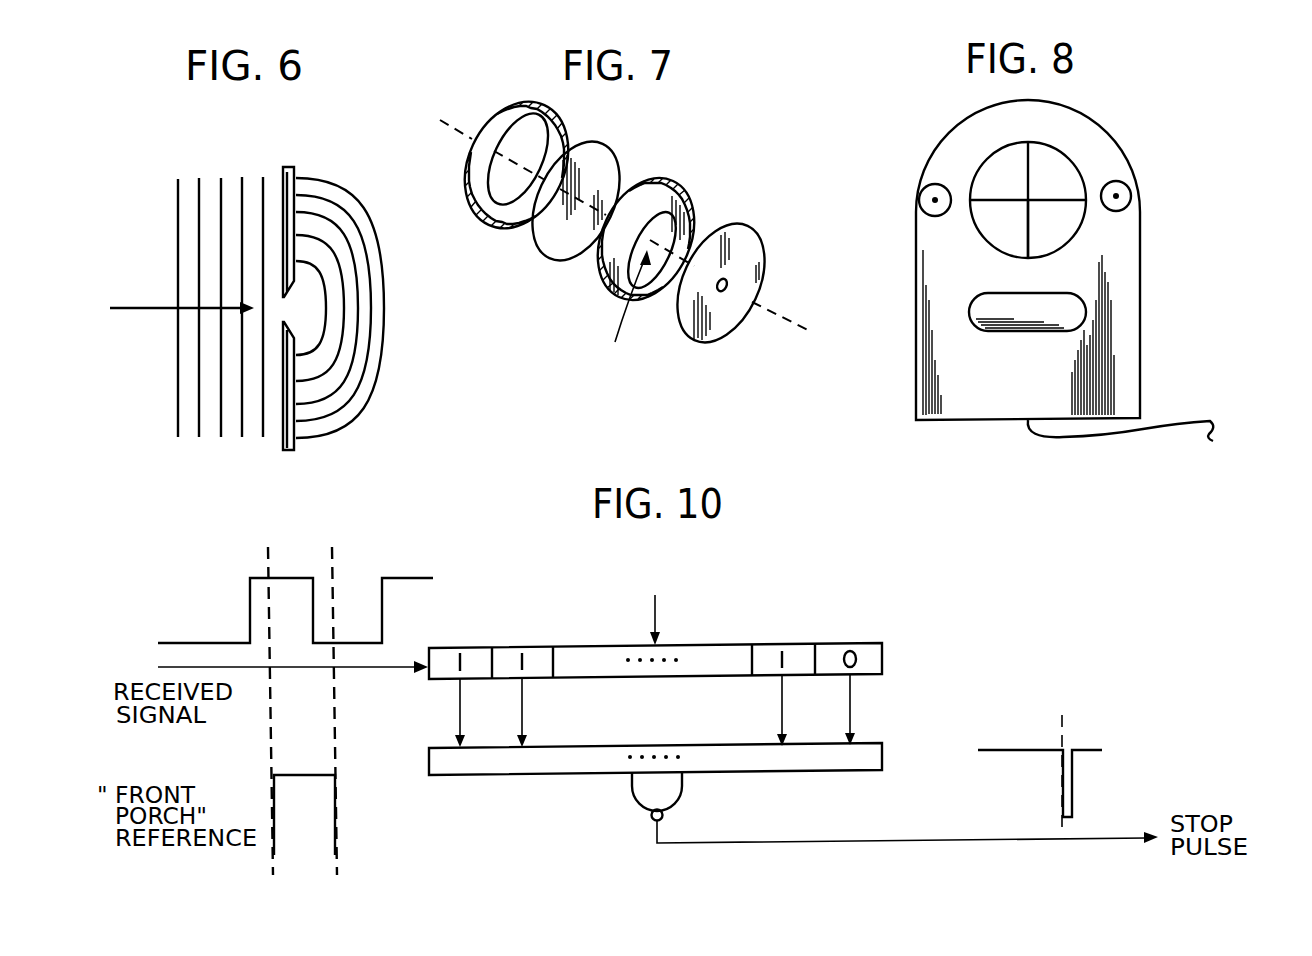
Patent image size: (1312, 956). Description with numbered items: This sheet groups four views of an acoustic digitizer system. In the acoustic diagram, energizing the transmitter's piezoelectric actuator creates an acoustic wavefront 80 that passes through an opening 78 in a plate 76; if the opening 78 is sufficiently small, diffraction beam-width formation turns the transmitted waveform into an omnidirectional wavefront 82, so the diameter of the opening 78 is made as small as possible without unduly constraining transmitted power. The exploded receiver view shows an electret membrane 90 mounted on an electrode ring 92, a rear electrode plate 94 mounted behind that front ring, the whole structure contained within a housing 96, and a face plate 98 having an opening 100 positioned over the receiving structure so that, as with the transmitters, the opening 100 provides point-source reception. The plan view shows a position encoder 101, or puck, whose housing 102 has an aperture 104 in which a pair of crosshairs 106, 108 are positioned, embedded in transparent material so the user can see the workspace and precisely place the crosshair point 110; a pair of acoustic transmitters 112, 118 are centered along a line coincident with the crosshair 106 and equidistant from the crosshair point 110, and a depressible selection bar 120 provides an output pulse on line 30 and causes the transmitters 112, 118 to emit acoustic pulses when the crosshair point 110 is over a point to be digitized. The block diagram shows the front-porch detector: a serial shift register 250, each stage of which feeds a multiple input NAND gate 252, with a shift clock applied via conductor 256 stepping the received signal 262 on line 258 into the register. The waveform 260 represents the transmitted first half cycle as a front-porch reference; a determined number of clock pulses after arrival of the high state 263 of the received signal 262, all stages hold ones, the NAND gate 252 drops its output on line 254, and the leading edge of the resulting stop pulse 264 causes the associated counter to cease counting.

In FIG. 6, the slit plate 76 is at (288, 168).
In FIG. 6, the opening 78 is at (283, 310).
In FIG. 6, the acoustic wavefront 80 is at (178, 260).
In FIG. 6, the omnidirectional wavefront 82 is at (337, 380).
In FIG. 7, the electret membrane 90 is at (624, 312).
In FIG. 7, the electrode ring 92 is at (615, 298).
In FIG. 7, the rear electrode plate 94 is at (558, 257).
In FIG. 7, the housing 96 is at (490, 224).
In FIG. 7, the face plate 98 is at (701, 336).
In FIG. 7, the opening 100 is at (729, 288).
In FIG. 8, the position encoder 101 is at (1209, 206).
In FIG. 8, the housing 102 is at (1141, 317).
In FIG. 8, the aperture 104 is at (1065, 227).
In FIG. 8, the crosshair 106 is at (1068, 192).
In FIG. 8, the crosshair 108 is at (1028, 233).
In FIG. 8, the crosshair point 110 is at (1028, 200).
In FIG. 8, the acoustic transmitter 112 is at (928, 218).
In FIG. 8, the acoustic transmitter 118 is at (1108, 182).
In FIG. 8, the depressible selection bar 120 is at (1064, 319).
In FIG. 8, the line 30 is at (1183, 420).
In FIG. 10, the serial shift register 250 is at (603, 643).
In FIG. 10, the multiple input NAND gate 252 is at (632, 797).
In FIG. 10, the line 254 is at (930, 843).
In FIG. 10, the conductor 256 is at (657, 612).
In FIG. 10, the line 258 is at (357, 669).
In FIG. 10, the waveform 260 is at (337, 812).
In FIG. 10, the received signal 262 is at (250, 595).
In FIG. 10, the high state 263 is at (282, 577).
In FIG. 10, the stop pulse 264 is at (1072, 778).